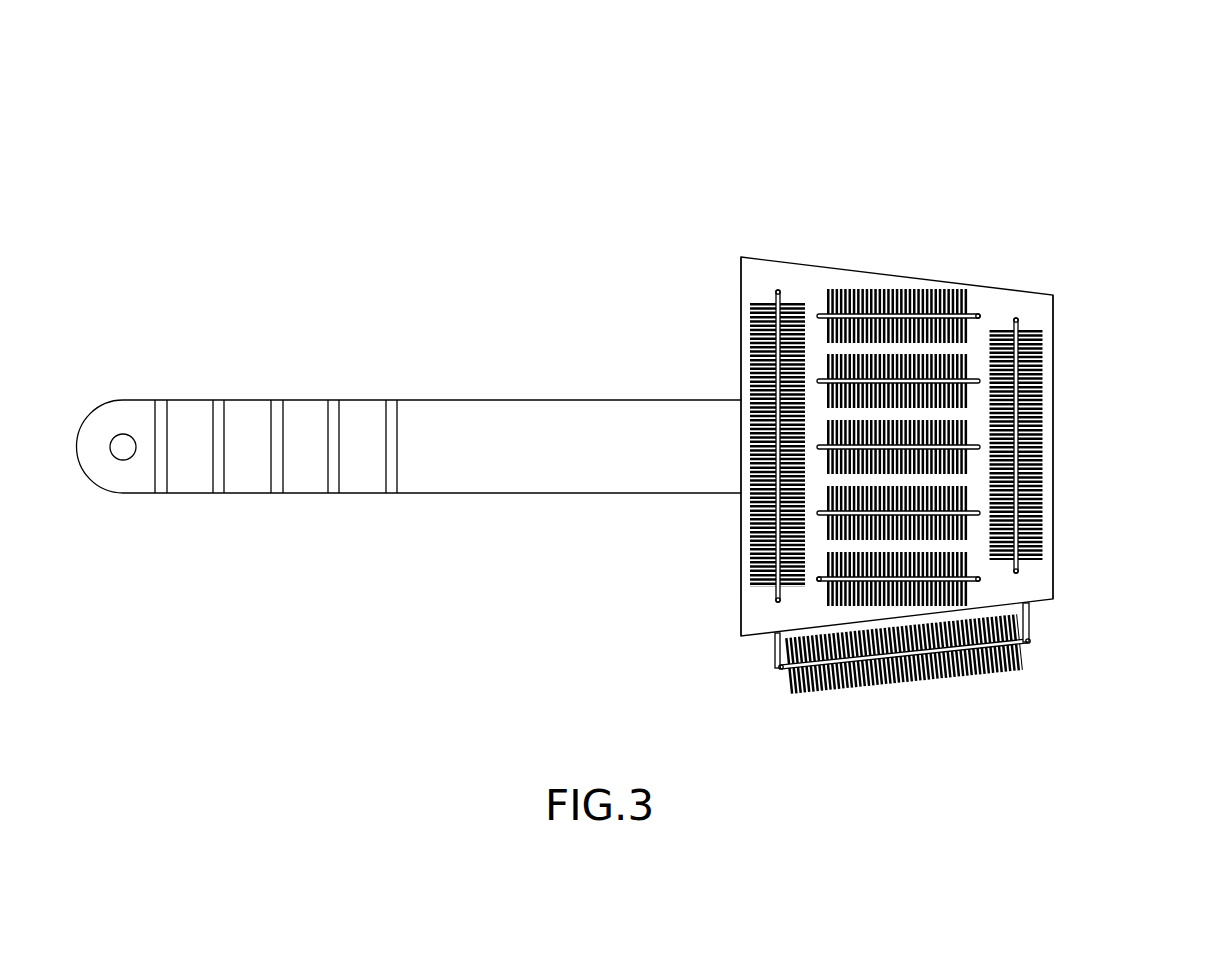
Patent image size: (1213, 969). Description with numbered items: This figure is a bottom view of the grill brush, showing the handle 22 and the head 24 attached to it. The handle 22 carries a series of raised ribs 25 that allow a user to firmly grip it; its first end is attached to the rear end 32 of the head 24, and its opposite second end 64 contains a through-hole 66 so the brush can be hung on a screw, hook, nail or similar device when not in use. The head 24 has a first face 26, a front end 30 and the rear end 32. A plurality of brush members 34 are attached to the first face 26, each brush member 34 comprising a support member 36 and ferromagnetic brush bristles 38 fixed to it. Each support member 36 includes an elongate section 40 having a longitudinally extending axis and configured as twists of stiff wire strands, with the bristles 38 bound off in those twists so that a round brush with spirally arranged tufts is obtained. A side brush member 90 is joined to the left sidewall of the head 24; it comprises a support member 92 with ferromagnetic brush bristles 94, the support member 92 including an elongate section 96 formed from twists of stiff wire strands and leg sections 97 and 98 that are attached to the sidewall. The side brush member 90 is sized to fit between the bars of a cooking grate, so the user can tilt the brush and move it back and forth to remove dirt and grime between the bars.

The handle 22 is at (492, 400).
The head 24 is at (911, 420).
The raised ribs 25 is at (161, 408).
The first face 26 is at (762, 278).
The front end 30 is at (1052, 508).
The rear end 32 is at (741, 555).
The brush member 34 is at (752, 345).
The support member 36 is at (779, 291).
The ferromagnetic brush bristles 38 is at (750, 425).
The elongate section 40 is at (778, 602).
The second end 64 is at (77, 448).
The through-hole 66 is at (117, 440).
The side brush member 90 is at (950, 658).
The support member 92 is at (1026, 625).
The ferromagnetic brush bristles 94 is at (790, 682).
The elongate section 96 is at (787, 665).
The leg section 97 is at (1030, 640).
The leg section 98 is at (777, 650).